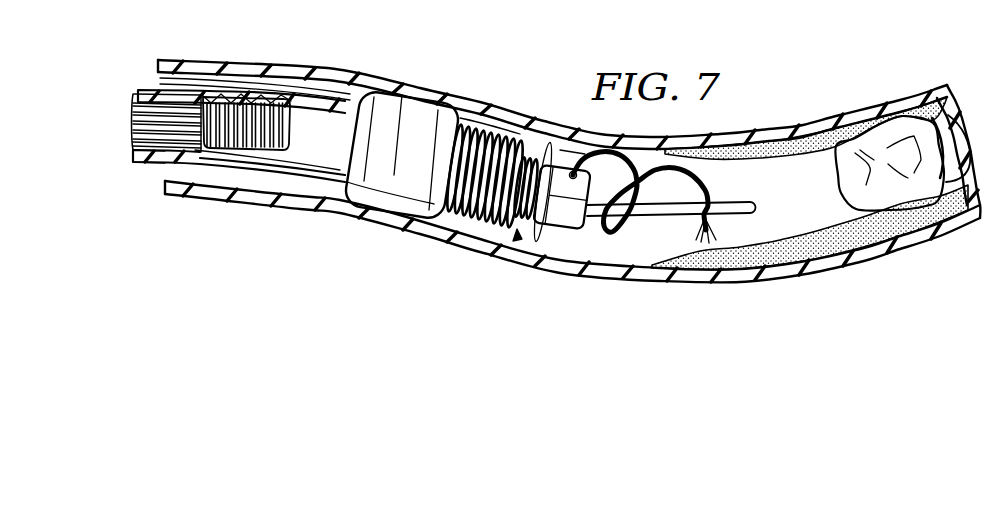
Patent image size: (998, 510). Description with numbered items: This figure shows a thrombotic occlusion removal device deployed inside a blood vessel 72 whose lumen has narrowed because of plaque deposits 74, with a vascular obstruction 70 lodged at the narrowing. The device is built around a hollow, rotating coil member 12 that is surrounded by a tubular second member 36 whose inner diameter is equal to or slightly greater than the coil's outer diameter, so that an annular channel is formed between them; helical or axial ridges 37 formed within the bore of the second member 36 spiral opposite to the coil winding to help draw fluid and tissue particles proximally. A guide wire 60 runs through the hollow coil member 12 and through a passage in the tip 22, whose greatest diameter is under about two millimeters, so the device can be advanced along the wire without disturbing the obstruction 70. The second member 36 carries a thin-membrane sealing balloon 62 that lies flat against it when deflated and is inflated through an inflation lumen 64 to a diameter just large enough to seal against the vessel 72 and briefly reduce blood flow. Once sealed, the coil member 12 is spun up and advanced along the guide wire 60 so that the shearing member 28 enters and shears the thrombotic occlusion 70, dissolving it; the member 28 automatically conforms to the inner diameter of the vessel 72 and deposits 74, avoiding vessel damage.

The coil member 12 is at (277, 120).
The tip 22 is at (548, 228).
The member 28 is at (707, 177).
The second member 36 is at (250, 74).
The helical or axial ridges 37 is at (290, 85).
The guide wire 60 is at (748, 218).
The sealing balloon 62 is at (400, 102).
The inflation lumen 64 is at (140, 162).
The vascular obstruction 70 is at (930, 140).
The vessel 72 is at (808, 125).
The plaque deposits 74 is at (863, 236).